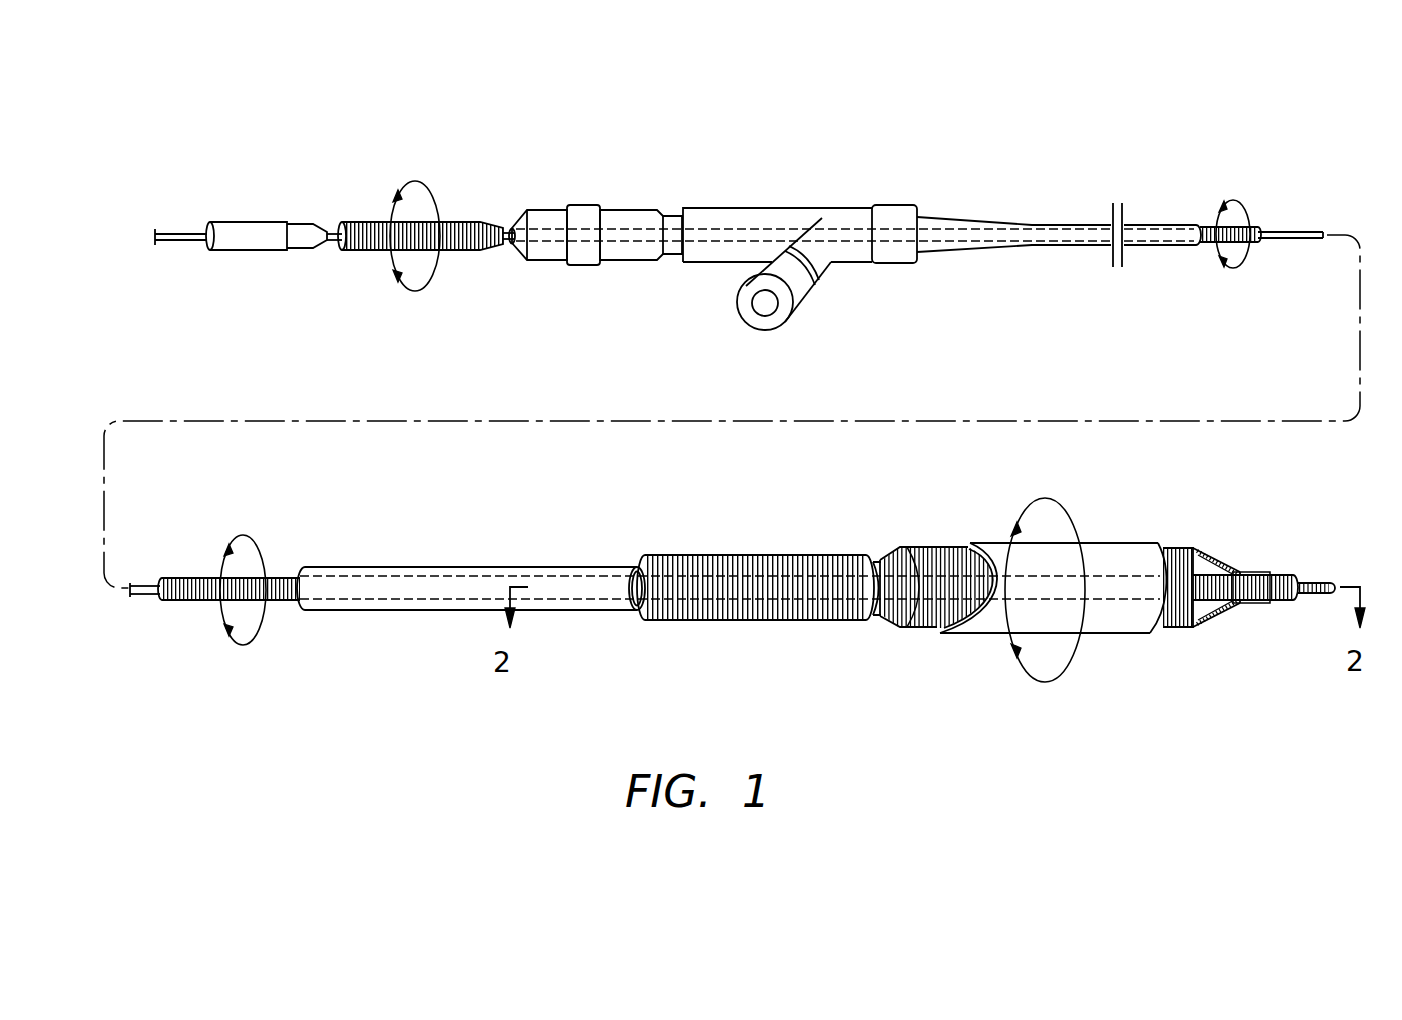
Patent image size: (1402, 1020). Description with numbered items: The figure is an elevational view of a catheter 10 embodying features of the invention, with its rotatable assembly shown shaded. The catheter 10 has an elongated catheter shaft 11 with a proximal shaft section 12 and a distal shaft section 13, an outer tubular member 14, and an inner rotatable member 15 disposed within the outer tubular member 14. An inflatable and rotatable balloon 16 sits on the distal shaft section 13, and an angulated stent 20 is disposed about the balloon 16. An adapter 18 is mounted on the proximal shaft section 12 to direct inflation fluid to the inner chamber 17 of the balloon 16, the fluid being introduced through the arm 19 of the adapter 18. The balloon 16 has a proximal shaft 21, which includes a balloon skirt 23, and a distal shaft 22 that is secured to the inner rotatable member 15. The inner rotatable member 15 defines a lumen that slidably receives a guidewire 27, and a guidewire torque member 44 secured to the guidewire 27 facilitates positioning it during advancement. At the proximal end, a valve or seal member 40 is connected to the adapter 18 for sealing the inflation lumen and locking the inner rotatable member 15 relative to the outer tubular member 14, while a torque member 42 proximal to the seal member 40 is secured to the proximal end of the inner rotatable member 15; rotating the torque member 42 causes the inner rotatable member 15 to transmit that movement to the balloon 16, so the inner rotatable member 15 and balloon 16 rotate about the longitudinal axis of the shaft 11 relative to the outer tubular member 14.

The catheter 10 is at (1153, 185).
The catheter shaft 11 is at (1188, 225).
The proximal shaft section 12 is at (1078, 223).
The distal shaft section 13 is at (583, 566).
The outer tubular member 14 is at (1158, 250).
The inner rotatable member 15 is at (1256, 244).
The balloon 16 is at (940, 546).
The inner chamber 17 is at (1205, 568).
The adapter 18 is at (772, 208).
The arm 19 is at (832, 264).
The angulated stent 20 is at (1123, 542).
The proximal shaft 21 is at (856, 621).
The distal shaft 22 is at (1242, 601).
The balloon skirt 23 is at (685, 623).
The guidewire 27 is at (184, 243).
The seal member 40 is at (625, 262).
The torque member 42 is at (477, 252).
The guidewire torque member 44 is at (272, 250).